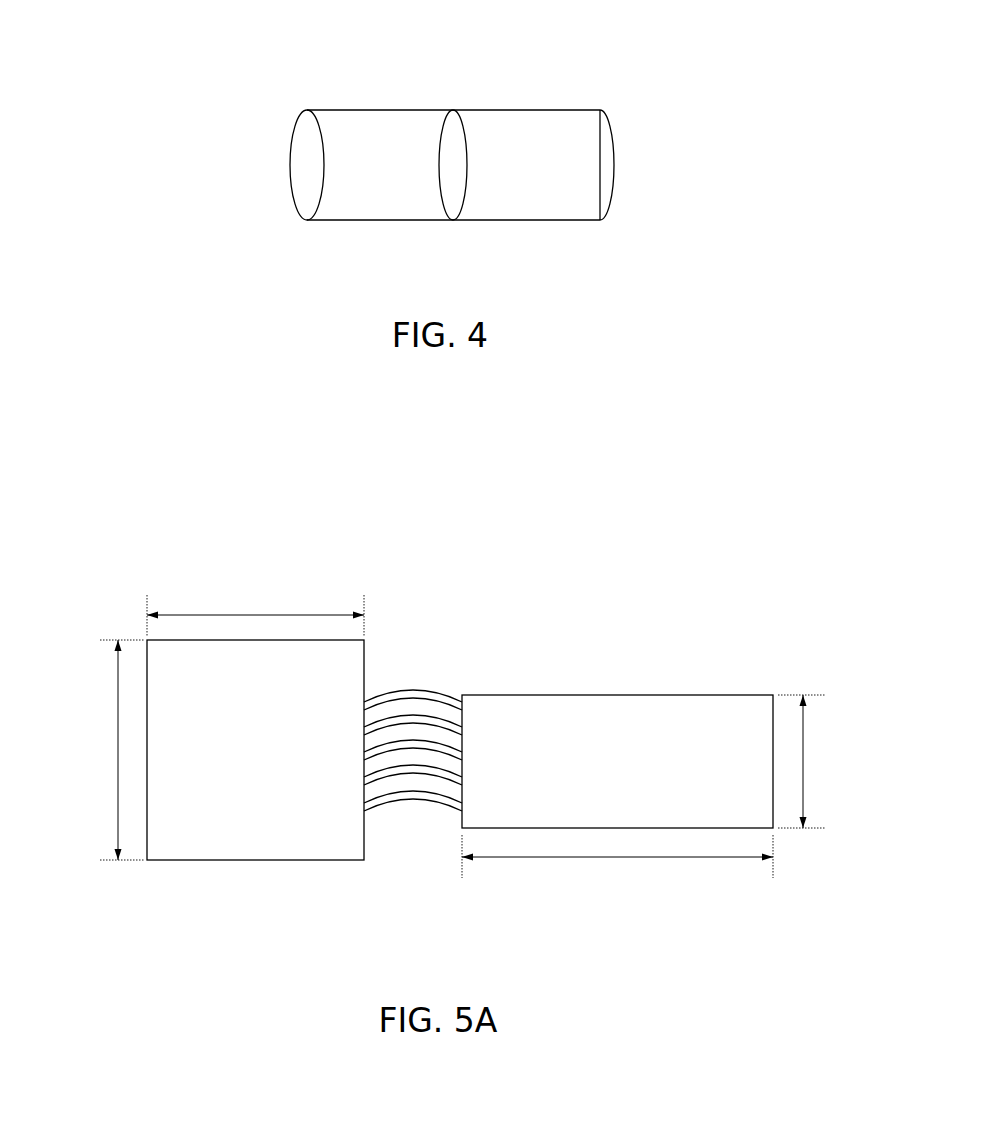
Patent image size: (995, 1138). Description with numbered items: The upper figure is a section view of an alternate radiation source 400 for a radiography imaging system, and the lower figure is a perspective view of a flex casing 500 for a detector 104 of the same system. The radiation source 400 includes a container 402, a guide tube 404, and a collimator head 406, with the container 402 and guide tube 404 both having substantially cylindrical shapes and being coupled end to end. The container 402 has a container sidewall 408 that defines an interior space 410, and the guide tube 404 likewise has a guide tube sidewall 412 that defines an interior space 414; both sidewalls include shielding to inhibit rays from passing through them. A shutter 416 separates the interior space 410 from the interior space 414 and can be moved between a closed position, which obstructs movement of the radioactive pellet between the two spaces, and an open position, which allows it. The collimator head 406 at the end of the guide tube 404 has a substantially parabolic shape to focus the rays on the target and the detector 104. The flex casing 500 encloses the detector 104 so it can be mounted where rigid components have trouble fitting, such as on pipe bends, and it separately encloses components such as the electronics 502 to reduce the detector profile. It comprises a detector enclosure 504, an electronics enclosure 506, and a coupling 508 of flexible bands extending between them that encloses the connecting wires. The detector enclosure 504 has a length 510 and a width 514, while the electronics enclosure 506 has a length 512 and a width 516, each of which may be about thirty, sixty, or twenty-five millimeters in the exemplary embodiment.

In FIG. 4, the radiation source 400 is at (465, 166).
In FIG. 4, the container 402 is at (362, 110).
In FIG. 4, the guide tube 404 is at (528, 110).
In FIG. 4, the collimator head 406 is at (613, 162).
In FIG. 4, the container sidewall 408 is at (399, 223).
In FIG. 4, the interior space 410 is at (348, 204).
In FIG. 4, the guide tube sidewall 412 is at (512, 223).
In FIG. 4, the interior space 414 is at (565, 204).
In FIG. 4, the shutter 416 is at (455, 208).
In FIG. 5A, the detector 104 is at (464, 736).
In FIG. 5A, the flex casing 500 is at (464, 736).
In FIG. 5A, the electronics 502 is at (662, 719).
In FIG. 5A, the detector enclosure 504 is at (293, 842).
In FIG. 5A, the electronics enclosure 506 is at (540, 693).
In FIG. 5A, the coupling 508 is at (413, 695).
In FIG. 5A, the length 510 is at (258, 612).
In FIG. 5A, the length 512 is at (612, 858).
In FIG. 5A, the width 514 is at (118, 750).
In FIG. 5A, the width 516 is at (805, 757).